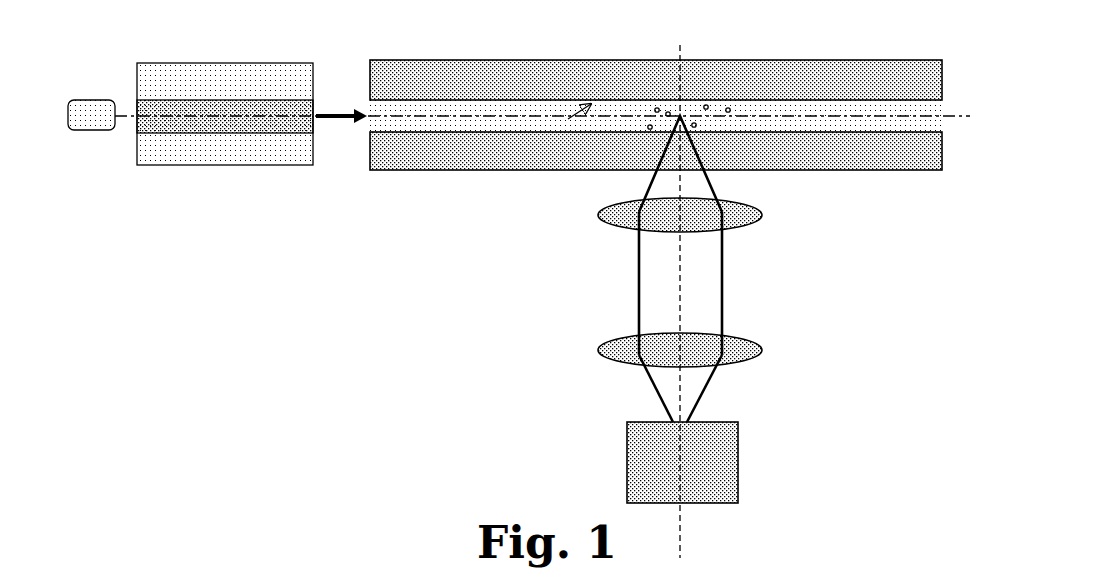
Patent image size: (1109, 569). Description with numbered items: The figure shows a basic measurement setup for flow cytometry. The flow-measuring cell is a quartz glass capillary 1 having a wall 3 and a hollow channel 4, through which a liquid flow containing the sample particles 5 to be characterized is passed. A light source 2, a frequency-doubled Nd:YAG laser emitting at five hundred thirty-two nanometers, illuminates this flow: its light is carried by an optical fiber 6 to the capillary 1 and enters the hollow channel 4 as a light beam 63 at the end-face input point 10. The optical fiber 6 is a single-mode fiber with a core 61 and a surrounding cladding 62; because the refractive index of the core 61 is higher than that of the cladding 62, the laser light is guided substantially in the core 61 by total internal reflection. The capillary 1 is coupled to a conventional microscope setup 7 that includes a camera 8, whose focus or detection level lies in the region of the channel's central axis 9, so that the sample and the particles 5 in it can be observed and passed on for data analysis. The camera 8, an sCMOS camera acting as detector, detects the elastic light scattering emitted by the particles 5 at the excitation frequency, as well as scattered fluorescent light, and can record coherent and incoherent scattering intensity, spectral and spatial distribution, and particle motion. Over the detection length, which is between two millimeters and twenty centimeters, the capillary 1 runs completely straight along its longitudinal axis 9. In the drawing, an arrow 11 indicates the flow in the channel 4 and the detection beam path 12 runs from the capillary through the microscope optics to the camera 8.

The quartz glass capillary 1 is at (656, 141).
The light source 2 is at (92, 100).
The wall 3 is at (847, 160).
The hollow channel 4 is at (503, 120).
The sample particles 5 is at (657, 110).
The optical fiber 6 is at (225, 133).
The microscope setup 7 is at (692, 269).
The camera 8 is at (720, 440).
The central axis 9 is at (955, 110).
The end-face input point 10 is at (339, 176).
The flow direction 11 is at (567, 120).
The detection beam path 12 is at (634, 260).
The core 61 is at (195, 123).
The cladding 62 is at (292, 73).
The light beam 63 is at (333, 108).